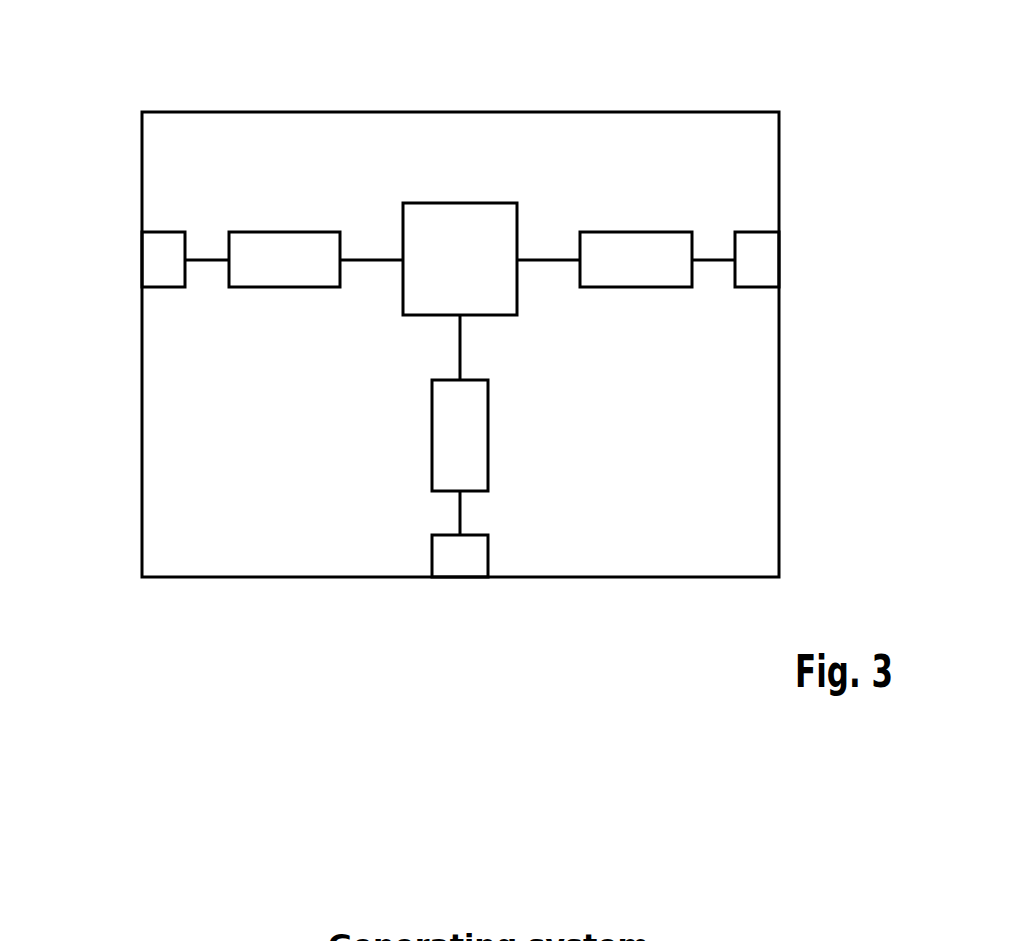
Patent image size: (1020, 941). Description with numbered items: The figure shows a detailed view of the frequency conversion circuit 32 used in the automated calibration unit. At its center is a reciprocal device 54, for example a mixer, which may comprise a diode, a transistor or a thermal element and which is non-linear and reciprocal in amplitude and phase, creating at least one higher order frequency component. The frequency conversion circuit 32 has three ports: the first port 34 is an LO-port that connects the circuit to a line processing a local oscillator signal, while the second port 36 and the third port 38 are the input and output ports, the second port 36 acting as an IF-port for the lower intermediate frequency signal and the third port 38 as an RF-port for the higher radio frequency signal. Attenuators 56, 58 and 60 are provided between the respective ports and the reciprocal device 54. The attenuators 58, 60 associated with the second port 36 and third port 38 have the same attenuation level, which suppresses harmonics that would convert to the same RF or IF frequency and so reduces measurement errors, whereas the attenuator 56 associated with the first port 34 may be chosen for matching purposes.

The frequency conversion circuit 32 is at (743, 132).
The first port 34 is at (457, 566).
The second port 36 is at (150, 261).
The third port 38 is at (765, 262).
The reciprocal device 54 is at (445, 203).
The attenuator 56 is at (488, 467).
The attenuator 58 is at (270, 232).
The attenuator 60 is at (629, 232).